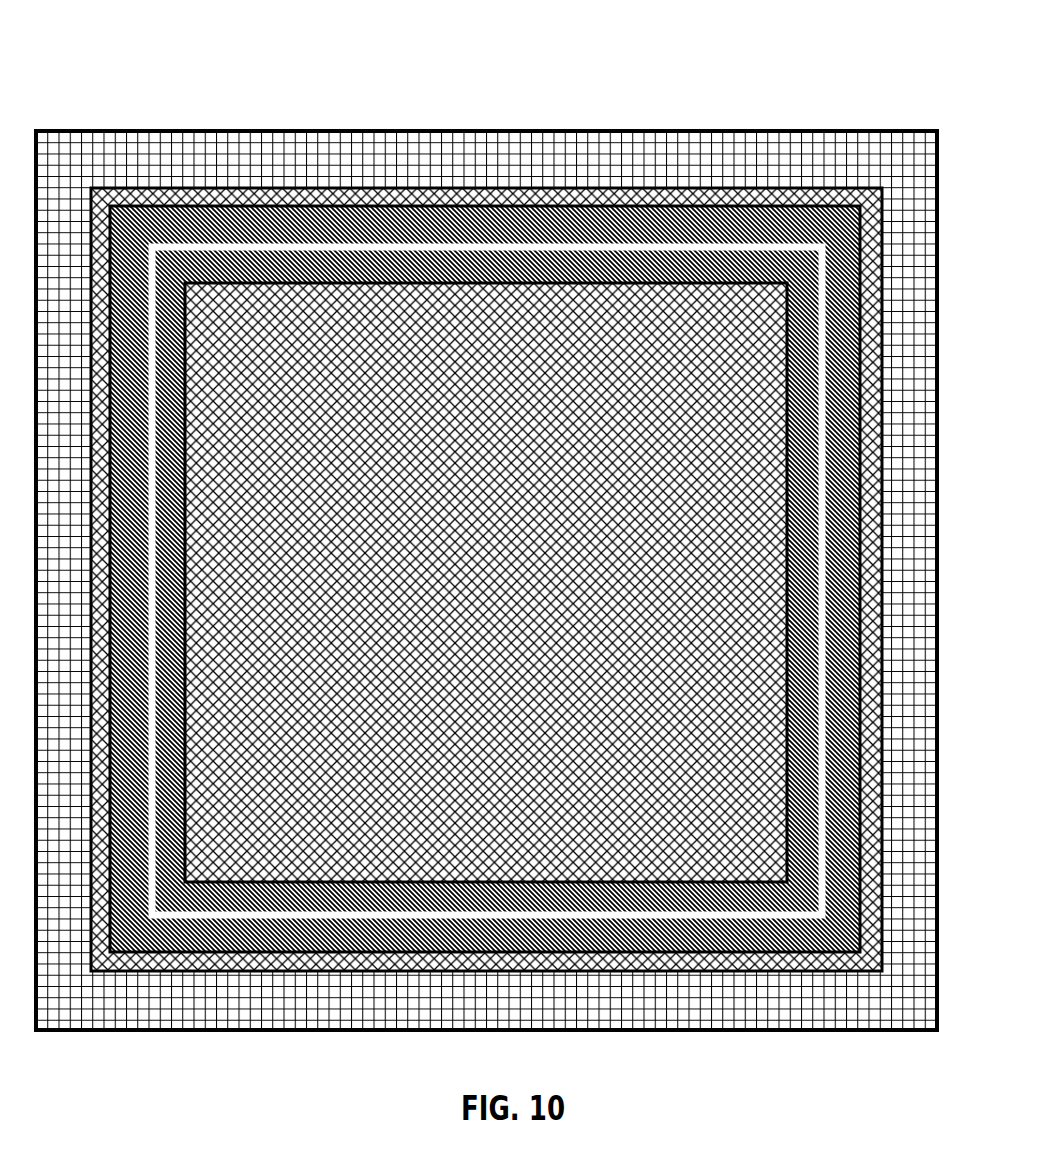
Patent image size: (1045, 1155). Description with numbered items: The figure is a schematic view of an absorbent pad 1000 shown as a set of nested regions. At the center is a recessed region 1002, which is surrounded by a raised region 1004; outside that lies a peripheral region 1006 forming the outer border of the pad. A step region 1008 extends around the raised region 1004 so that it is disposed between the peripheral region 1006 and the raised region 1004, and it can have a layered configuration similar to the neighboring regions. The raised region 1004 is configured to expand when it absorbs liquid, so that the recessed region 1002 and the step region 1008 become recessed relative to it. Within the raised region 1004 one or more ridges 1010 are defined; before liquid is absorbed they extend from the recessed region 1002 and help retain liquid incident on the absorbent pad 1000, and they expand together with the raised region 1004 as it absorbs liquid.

The absorbent pad 1000 is at (486, 515).
The recessed region 1002 is at (732, 298).
The raised region 1004 is at (720, 218).
The peripheral region 1006 is at (595, 147).
The step region 1008 is at (648, 196).
The ridges 1010 is at (447, 246).